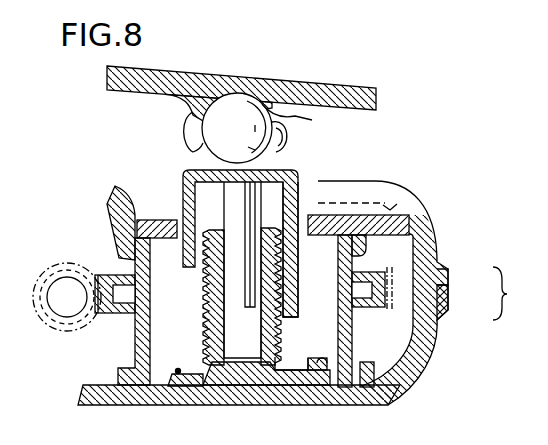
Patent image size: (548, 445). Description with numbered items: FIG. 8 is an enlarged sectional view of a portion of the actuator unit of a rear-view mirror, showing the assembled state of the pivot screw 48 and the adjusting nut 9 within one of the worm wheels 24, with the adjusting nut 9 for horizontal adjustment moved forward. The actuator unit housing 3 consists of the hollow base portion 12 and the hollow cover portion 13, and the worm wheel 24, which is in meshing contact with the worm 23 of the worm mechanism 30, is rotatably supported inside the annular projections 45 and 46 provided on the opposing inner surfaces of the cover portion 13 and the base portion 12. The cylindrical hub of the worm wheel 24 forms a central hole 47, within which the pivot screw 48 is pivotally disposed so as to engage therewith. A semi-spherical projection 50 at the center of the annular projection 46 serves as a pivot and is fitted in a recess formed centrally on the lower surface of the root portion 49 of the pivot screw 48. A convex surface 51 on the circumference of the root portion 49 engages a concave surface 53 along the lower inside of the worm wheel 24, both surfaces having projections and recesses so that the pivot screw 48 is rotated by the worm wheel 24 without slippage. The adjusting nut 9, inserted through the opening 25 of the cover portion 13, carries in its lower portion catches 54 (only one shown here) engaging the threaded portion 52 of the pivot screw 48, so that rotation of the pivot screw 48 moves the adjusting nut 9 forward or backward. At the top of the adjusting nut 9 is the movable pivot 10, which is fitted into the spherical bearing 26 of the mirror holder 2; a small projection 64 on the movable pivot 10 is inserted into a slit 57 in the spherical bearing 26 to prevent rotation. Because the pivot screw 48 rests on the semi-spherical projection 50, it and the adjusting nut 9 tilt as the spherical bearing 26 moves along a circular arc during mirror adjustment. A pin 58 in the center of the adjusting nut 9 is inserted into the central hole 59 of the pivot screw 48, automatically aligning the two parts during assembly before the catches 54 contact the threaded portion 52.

The mirror holder 2 is at (143, 90).
The actuator unit housing 3 is at (511, 293).
The adjusting nut 9 is at (296, 174).
The movable pivot 10 is at (247, 118).
The base portion 12 is at (440, 320).
The cover portion 13 is at (447, 275).
The worm 23 is at (43, 283).
The worm wheel 24 is at (107, 308).
The opening 25 is at (178, 223).
The spherical bearing 26 is at (187, 118).
The worm mechanism 30 is at (81, 266).
The annular projection 45 is at (358, 252).
The annular projection 46 is at (366, 365).
The central hole 47 is at (178, 309).
The pivot screw 48 is at (263, 227).
The root portion 49 is at (202, 380).
The semi-spherical projection 50 is at (245, 378).
The convex surface 51 is at (320, 375).
The threaded portion 52 is at (203, 340).
The concave surface 53 is at (340, 403).
The catches 54 is at (293, 318).
The slit 57 is at (312, 120).
The pin 58 is at (232, 217).
The central hole 59 is at (253, 350).
The small projection 64 is at (287, 134).